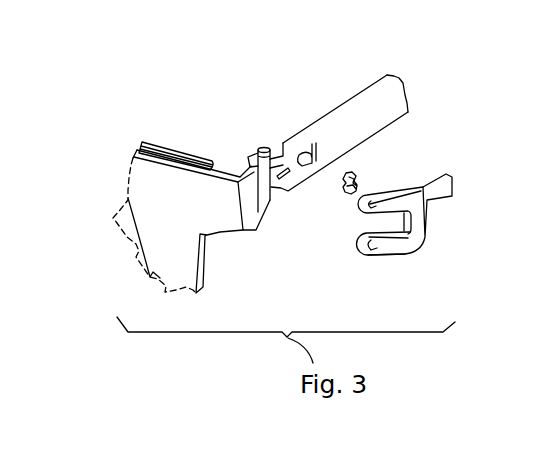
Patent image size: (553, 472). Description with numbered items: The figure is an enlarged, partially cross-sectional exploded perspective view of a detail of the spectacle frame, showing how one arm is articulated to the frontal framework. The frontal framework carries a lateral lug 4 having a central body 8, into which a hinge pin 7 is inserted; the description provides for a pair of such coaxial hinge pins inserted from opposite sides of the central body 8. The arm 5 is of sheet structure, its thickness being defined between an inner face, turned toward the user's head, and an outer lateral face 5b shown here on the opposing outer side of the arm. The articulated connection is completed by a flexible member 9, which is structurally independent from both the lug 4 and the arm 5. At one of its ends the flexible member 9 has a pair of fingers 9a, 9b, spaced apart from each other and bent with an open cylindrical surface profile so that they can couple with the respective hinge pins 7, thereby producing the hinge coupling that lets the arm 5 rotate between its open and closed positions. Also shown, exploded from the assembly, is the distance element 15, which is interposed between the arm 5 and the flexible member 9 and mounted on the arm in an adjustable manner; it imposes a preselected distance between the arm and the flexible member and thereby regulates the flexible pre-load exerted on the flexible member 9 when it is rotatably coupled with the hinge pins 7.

The lateral lug 4 is at (247, 207).
The arm 5 is at (375, 109).
The outer lateral face 5b is at (383, 103).
The hinge pin 7 is at (260, 146).
The central body 8 is at (247, 160).
The flexible member 9 is at (396, 234).
The finger 9a is at (365, 212).
The finger 9b is at (385, 252).
The distance element 15 is at (367, 173).